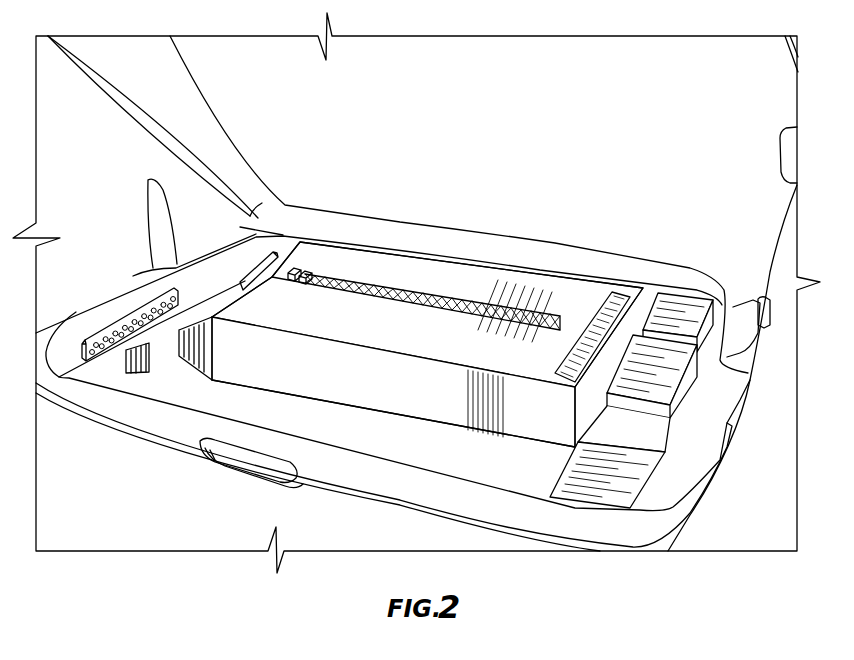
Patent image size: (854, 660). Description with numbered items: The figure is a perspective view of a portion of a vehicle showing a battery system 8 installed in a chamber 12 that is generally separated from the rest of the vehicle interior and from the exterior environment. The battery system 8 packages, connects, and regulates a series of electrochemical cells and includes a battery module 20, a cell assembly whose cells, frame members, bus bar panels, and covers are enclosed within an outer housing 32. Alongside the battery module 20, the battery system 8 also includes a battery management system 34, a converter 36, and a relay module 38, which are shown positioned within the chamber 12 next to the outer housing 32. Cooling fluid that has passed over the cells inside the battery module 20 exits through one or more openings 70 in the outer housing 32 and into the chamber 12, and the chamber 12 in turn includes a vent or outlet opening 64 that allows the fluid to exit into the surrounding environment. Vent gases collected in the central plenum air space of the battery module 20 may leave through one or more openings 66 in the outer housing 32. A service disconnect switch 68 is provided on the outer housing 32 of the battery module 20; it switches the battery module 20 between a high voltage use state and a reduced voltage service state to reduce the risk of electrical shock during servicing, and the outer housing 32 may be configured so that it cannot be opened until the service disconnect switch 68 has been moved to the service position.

The battery system 8 is at (612, 154).
The chamber 12 is at (483, 451).
The battery module 20 is at (417, 245).
The outer housing 32 is at (380, 403).
The battery management system 34 is at (673, 382).
The converter 36 is at (641, 447).
The relay module 38 is at (673, 303).
The vent 64 is at (116, 335).
The openings 66 is at (538, 298).
The service disconnect switch 68 is at (308, 266).
The openings 70 is at (620, 290).